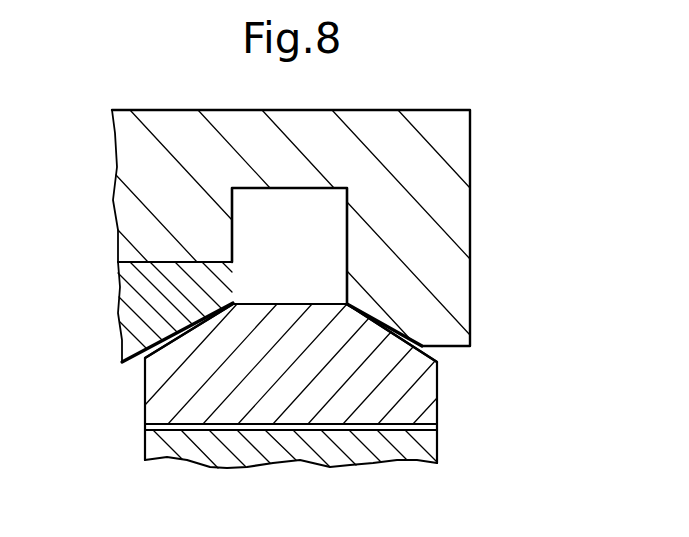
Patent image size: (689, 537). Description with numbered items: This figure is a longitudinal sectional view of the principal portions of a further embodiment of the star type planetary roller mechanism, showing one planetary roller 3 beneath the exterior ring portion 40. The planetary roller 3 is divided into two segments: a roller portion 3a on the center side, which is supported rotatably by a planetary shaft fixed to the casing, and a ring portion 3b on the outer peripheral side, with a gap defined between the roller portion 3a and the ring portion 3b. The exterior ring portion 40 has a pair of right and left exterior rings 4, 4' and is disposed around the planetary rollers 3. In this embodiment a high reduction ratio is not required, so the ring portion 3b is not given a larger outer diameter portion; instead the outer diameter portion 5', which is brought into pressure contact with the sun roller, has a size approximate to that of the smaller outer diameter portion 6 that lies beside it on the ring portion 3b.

The exterior ring portion 40 is at (335, 228).
The exterior ring 4' is at (444, 274).
The outer diameter portion 5' is at (289, 247).
The exterior ring 4 is at (145, 312).
The planetary roller 3 is at (290, 339).
The ring portion 3b is at (155, 392).
The roller portion 3a is at (155, 450).
The smaller outer diameter portion 6 is at (377, 330).